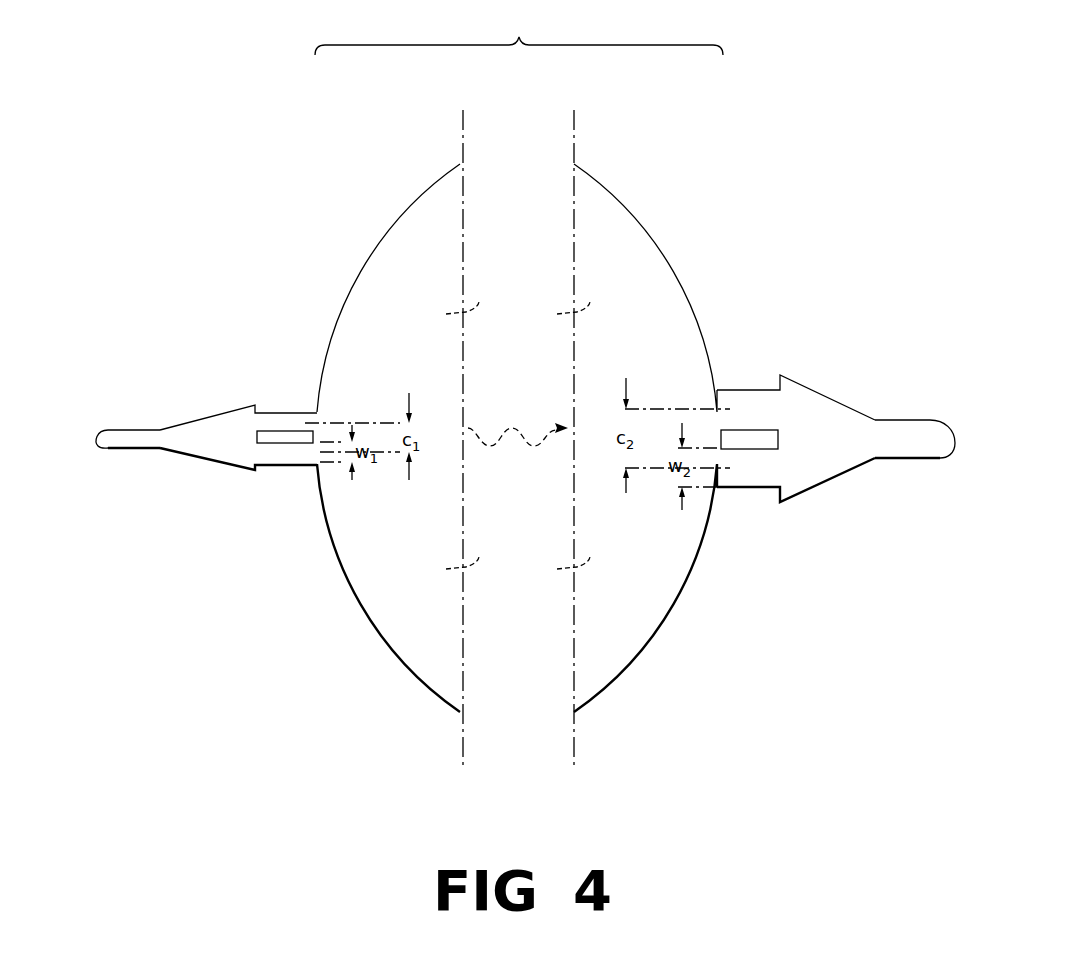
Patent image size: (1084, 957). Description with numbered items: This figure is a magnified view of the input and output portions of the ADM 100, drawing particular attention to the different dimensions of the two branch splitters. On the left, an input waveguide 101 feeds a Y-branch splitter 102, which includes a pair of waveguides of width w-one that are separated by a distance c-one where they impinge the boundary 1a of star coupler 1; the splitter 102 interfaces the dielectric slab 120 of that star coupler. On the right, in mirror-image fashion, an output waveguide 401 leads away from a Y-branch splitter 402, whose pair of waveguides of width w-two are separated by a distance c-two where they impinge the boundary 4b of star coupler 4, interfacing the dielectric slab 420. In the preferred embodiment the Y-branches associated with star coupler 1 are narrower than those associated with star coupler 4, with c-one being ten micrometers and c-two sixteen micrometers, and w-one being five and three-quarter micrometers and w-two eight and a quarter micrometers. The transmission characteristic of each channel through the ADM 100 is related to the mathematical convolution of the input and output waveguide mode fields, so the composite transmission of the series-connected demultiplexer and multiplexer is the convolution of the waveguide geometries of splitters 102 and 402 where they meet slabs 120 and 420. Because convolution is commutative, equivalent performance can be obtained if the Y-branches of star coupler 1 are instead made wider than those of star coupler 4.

The ADM 100 is at (519, 33).
The star coupler 1 is at (370, 243).
The boundary of star coupler 1 1a is at (407, 667).
The dielectric slab 120 is at (388, 438).
The star coupler 4 is at (665, 243).
The boundary of star coupler 4 4b is at (627, 665).
The dielectric slab 420 is at (645, 438).
The input waveguide 101 is at (142, 432).
The branch splitter 102 is at (225, 418).
The output waveguide 401 is at (903, 422).
The branch splitter 402 is at (819, 398).